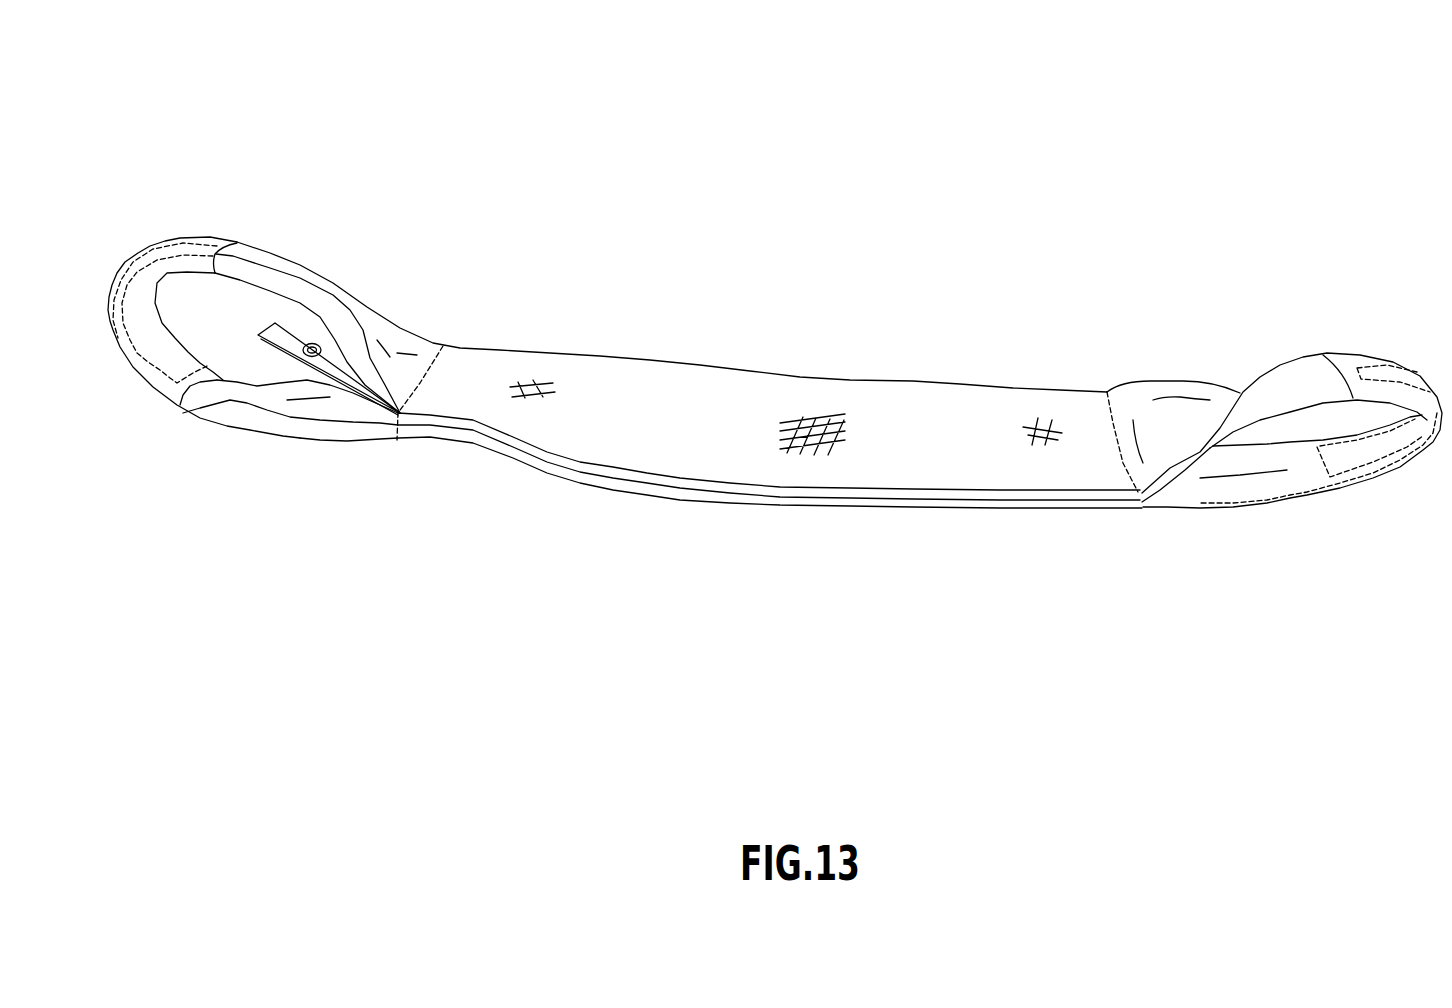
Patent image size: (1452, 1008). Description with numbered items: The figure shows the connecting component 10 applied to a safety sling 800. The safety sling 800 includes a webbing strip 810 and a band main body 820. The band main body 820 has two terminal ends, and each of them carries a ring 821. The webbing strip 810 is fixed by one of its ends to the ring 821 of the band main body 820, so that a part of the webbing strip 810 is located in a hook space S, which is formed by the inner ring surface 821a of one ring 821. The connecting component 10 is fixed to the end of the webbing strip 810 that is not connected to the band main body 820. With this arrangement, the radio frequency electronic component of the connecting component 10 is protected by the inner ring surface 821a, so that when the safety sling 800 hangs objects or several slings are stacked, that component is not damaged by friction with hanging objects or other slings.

The safety sling 800 is at (1094, 182).
The band main body 820 is at (662, 357).
The ring 821 is at (230, 243).
The inner ring surface 821a is at (220, 385).
The webbing strip 810 is at (345, 396).
The connecting component 10 is at (317, 341).
The hook space S is at (208, 332).